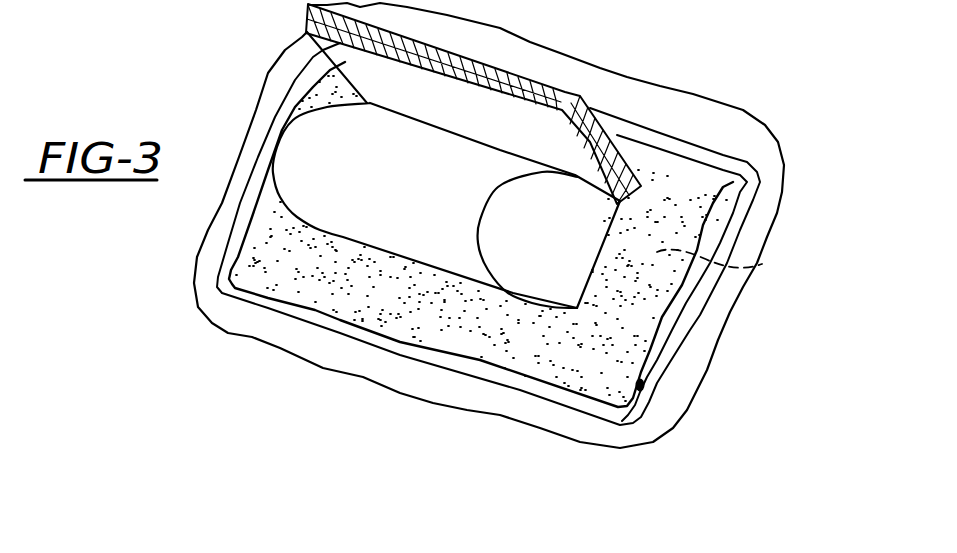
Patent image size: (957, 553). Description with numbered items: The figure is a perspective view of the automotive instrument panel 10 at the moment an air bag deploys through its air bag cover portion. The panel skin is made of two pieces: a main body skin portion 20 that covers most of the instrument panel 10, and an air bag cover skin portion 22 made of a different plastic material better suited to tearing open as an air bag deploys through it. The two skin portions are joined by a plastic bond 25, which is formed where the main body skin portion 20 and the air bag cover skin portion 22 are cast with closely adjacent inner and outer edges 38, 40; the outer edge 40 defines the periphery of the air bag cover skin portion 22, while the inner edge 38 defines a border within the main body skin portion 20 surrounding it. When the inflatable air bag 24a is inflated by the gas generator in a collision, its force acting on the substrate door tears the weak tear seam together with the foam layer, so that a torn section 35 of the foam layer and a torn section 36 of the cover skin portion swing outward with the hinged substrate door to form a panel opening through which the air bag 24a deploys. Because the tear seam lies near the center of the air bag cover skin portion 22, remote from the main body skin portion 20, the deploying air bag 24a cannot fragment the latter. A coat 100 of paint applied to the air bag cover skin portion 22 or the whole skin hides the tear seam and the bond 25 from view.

The automotive instrument panel 10 is at (790, 130).
The main body skin portion 20 is at (768, 197).
The air bag cover skin portion 22 is at (727, 256).
The inflatable air bag 24a is at (380, 232).
The plastic bond 25 is at (660, 350).
The torn section of the foam layer 35 is at (637, 180).
The torn section of the cover skin portion 36 is at (618, 143).
The inner edge 38 is at (653, 370).
The outer edge 40 is at (672, 295).
The coat of paint 100 is at (493, 358).